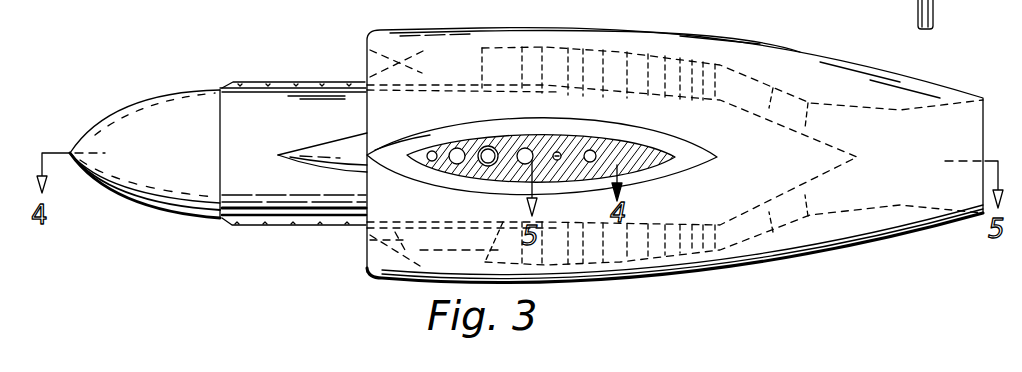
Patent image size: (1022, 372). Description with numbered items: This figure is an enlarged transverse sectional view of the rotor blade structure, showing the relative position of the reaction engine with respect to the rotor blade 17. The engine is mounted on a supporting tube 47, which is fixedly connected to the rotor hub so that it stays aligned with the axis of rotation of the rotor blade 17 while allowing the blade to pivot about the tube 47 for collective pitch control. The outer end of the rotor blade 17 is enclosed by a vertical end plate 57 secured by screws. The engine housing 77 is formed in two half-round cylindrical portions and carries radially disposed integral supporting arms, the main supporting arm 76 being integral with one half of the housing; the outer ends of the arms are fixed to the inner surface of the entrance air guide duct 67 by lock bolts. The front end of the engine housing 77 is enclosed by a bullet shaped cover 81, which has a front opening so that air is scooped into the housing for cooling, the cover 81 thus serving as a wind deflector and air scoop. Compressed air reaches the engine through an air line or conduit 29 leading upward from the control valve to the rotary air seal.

The bullet shaped cover 81 is at (100, 117).
The engine housing 77 is at (240, 113).
The main supporting arm 76 is at (340, 143).
The entrance air guide duct 67 is at (500, 42).
The supporting tube 47 is at (488, 148).
The rotor blade 17 is at (612, 148).
The vertical end plate 57 is at (688, 150).
The air line or conduit 29 is at (935, 12).